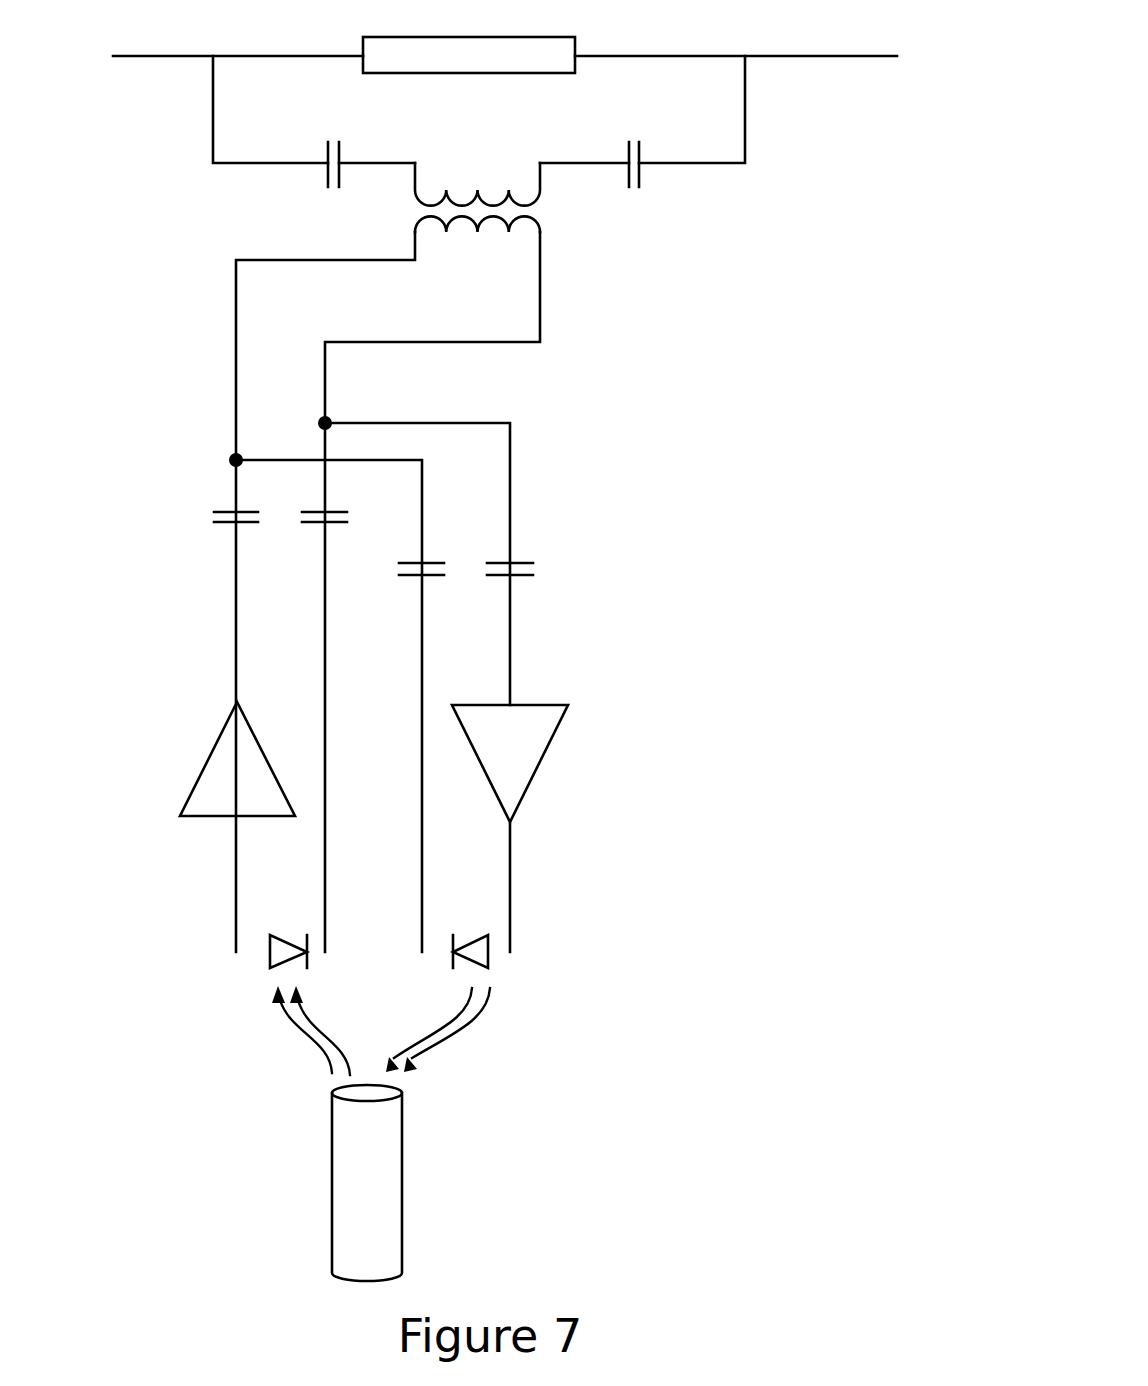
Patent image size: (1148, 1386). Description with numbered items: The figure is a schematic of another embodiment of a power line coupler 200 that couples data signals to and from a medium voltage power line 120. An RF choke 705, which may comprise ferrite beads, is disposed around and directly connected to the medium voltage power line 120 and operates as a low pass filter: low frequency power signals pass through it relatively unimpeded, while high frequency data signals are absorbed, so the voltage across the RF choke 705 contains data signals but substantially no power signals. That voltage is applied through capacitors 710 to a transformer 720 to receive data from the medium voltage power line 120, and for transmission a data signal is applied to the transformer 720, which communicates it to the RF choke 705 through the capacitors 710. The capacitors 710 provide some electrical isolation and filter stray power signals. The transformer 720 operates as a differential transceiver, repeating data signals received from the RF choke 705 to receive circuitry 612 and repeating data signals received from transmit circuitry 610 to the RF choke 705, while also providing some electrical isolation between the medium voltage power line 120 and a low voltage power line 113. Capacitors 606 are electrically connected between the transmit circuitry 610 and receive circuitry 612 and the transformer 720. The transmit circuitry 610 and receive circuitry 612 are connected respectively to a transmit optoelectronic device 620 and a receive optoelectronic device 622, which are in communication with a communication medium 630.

The power line coupler 200 is at (448, 17).
The low voltage power line 113 is at (200, 56).
The medium voltage power line 120 is at (770, 56).
The RF choke 705 is at (363, 37).
The capacitors 710 is at (328, 142).
The transformer 720 is at (540, 268).
The capacitors 606 is at (213, 512).
The transmit circuitry 610 is at (228, 718).
The receive circuitry 612 is at (518, 703).
The transmit optoelectronic device 620 is at (271, 968).
The receive optoelectronic device 622 is at (488, 968).
The communication medium 630 is at (332, 1190).